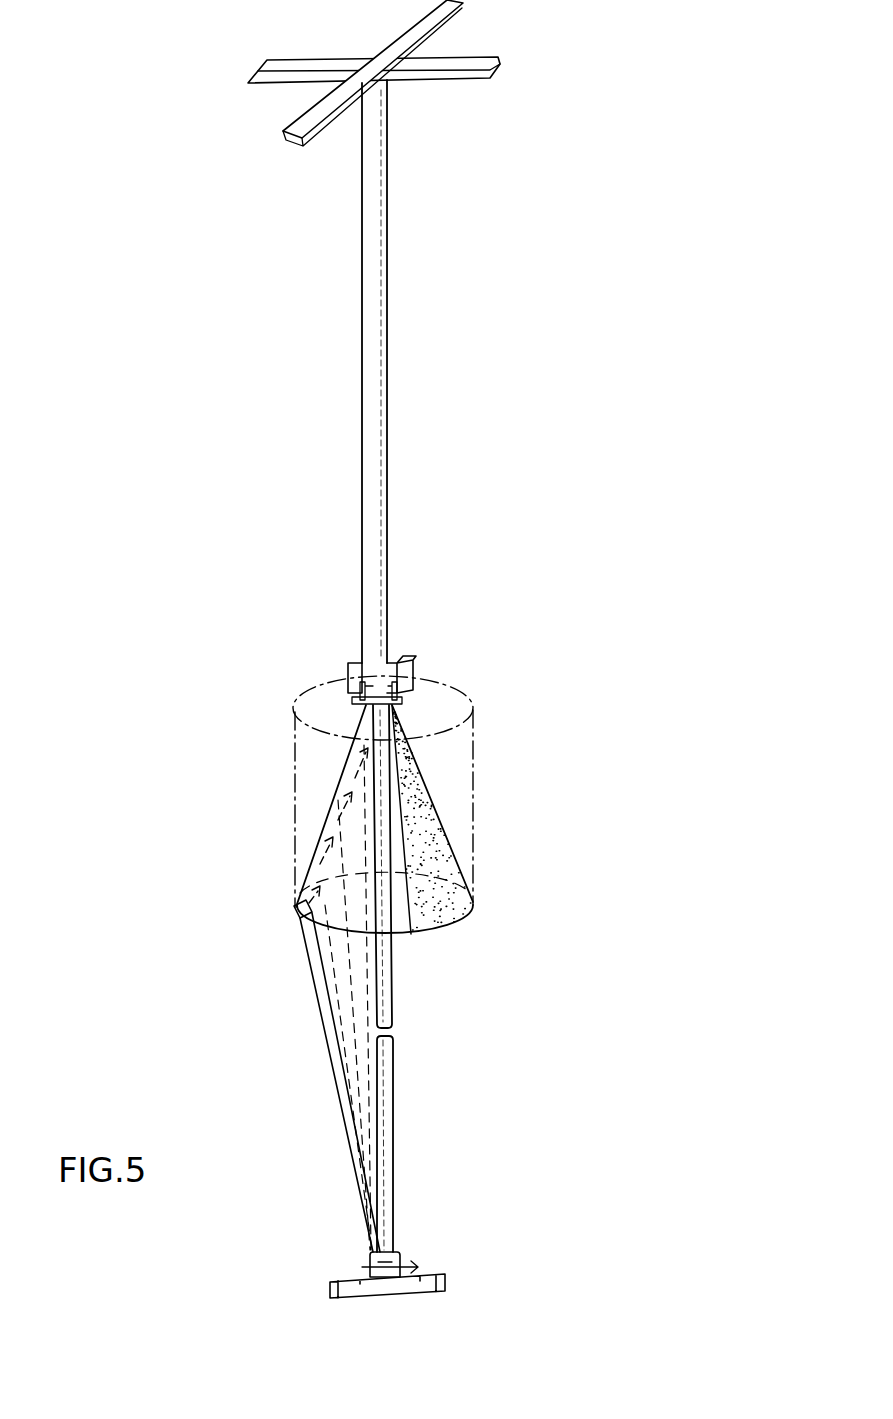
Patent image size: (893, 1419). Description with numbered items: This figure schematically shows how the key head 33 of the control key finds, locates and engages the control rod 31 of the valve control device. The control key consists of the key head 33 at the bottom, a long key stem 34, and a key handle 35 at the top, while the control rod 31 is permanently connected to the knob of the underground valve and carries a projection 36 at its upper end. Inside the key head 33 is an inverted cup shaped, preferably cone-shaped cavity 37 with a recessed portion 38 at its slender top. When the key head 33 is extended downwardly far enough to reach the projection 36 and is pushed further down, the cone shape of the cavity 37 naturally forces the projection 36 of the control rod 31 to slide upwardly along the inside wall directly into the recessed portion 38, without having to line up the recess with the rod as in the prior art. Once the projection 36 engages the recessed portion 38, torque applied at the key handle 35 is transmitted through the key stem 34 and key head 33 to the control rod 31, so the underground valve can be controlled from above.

The control rod 31 is at (393, 1065).
The key head 33 is at (312, 776).
The key stem 34 is at (387, 308).
The key handle 35 is at (430, 80).
The projection 36 is at (296, 917).
The cone-shaped cavity 37 is at (447, 827).
The recessed portion 38 is at (372, 700).